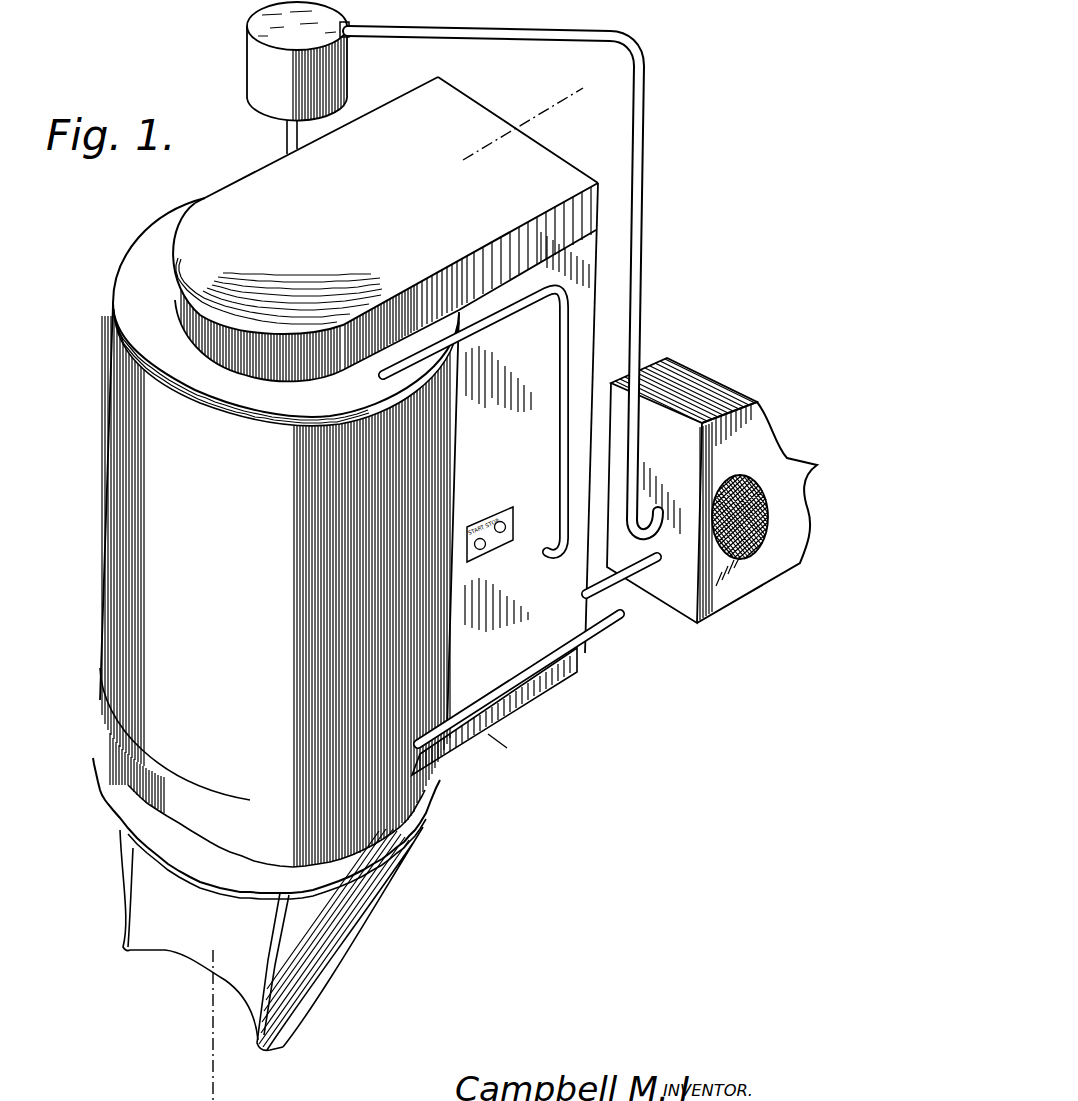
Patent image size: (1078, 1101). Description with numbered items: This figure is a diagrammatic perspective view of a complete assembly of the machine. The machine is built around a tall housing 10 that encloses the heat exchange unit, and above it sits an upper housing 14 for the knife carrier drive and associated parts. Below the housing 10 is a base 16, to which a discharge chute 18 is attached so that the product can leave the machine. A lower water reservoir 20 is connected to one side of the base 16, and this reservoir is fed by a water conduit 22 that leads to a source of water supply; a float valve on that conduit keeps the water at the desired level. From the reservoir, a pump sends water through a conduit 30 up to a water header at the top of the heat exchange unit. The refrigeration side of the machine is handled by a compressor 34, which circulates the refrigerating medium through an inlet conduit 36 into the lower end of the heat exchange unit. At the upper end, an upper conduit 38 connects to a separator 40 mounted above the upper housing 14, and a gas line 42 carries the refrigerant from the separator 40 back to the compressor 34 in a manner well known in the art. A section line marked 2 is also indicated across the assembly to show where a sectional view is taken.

The section line 2- 2 is at (537, 85).
The housing 10 is at (150, 563).
The upper housing 14 is at (366, 221).
The base 16 is at (145, 795).
The discharge chute 18 is at (180, 958).
The lower water reservoir 20 is at (519, 716).
The water conduit 22 is at (615, 627).
The conduit 30 is at (560, 452).
The compressor 34 is at (747, 590).
The inlet conduit 36 is at (641, 572).
The upper conduit 38 is at (287, 142).
The separator 40 is at (247, 62).
The gas line 42 is at (408, 42).